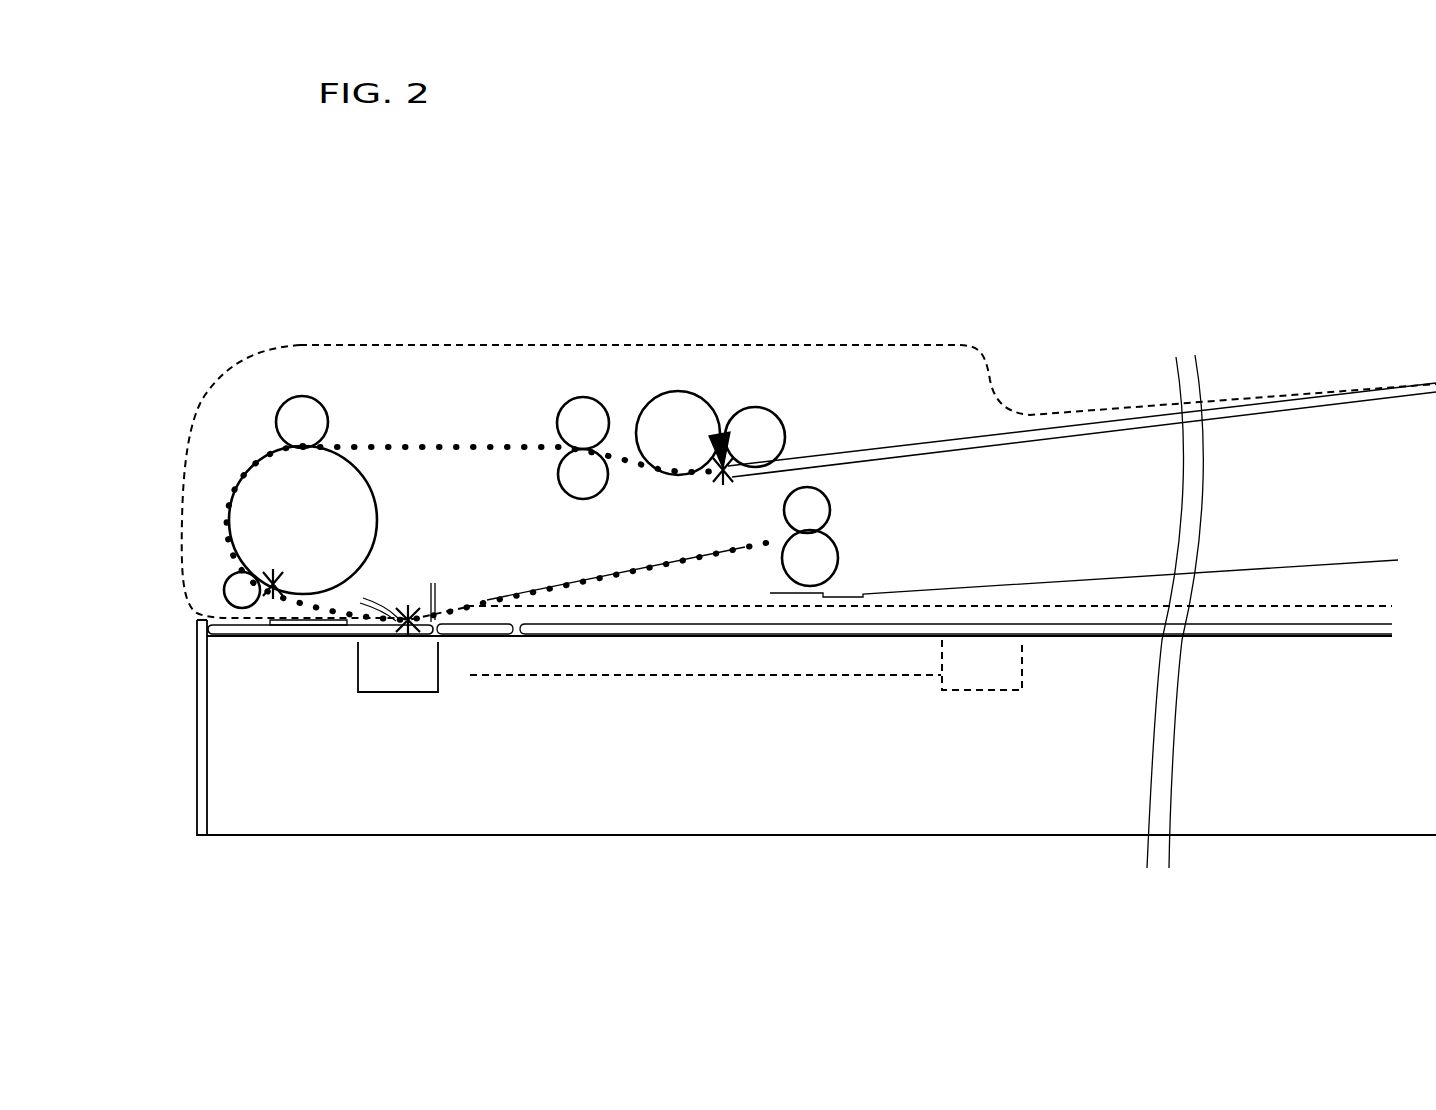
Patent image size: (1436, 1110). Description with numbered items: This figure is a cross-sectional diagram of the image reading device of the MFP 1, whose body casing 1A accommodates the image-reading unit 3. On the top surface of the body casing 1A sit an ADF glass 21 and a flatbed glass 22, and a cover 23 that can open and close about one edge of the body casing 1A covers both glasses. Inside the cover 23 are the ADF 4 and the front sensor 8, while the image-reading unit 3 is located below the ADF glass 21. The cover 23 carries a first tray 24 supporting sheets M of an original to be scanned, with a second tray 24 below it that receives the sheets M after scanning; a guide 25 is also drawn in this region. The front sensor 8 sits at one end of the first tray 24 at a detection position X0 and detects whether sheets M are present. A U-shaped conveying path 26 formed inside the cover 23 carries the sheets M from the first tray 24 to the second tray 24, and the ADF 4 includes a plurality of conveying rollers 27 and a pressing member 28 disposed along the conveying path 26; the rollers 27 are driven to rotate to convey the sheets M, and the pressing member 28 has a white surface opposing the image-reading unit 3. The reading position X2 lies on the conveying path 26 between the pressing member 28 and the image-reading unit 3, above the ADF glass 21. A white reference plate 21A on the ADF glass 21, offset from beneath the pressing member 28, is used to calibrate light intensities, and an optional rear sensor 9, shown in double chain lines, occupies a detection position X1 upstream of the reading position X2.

The MFP 1 is at (832, 170).
The body casing 1A is at (197, 708).
The image-reading unit 3 is at (438, 686).
The ADF 4 is at (236, 436).
The front sensor 8 is at (712, 447).
The rear sensor 9 is at (303, 560).
The ADF glass 21 is at (252, 634).
The white reference plate 21A is at (333, 622).
The flatbed glass 22 is at (612, 634).
The cover 23 is at (487, 343).
The first tray 24 is at (1300, 404).
The guide 25 is at (1285, 572).
The conveying path 26 is at (637, 556).
The conveying rollers 27 is at (753, 420).
The pressing member 28 is at (431, 583).
The sheet M is at (955, 440).
The detection position X0 is at (722, 476).
The detection position X1 is at (273, 590).
The reading position X2 is at (406, 612).